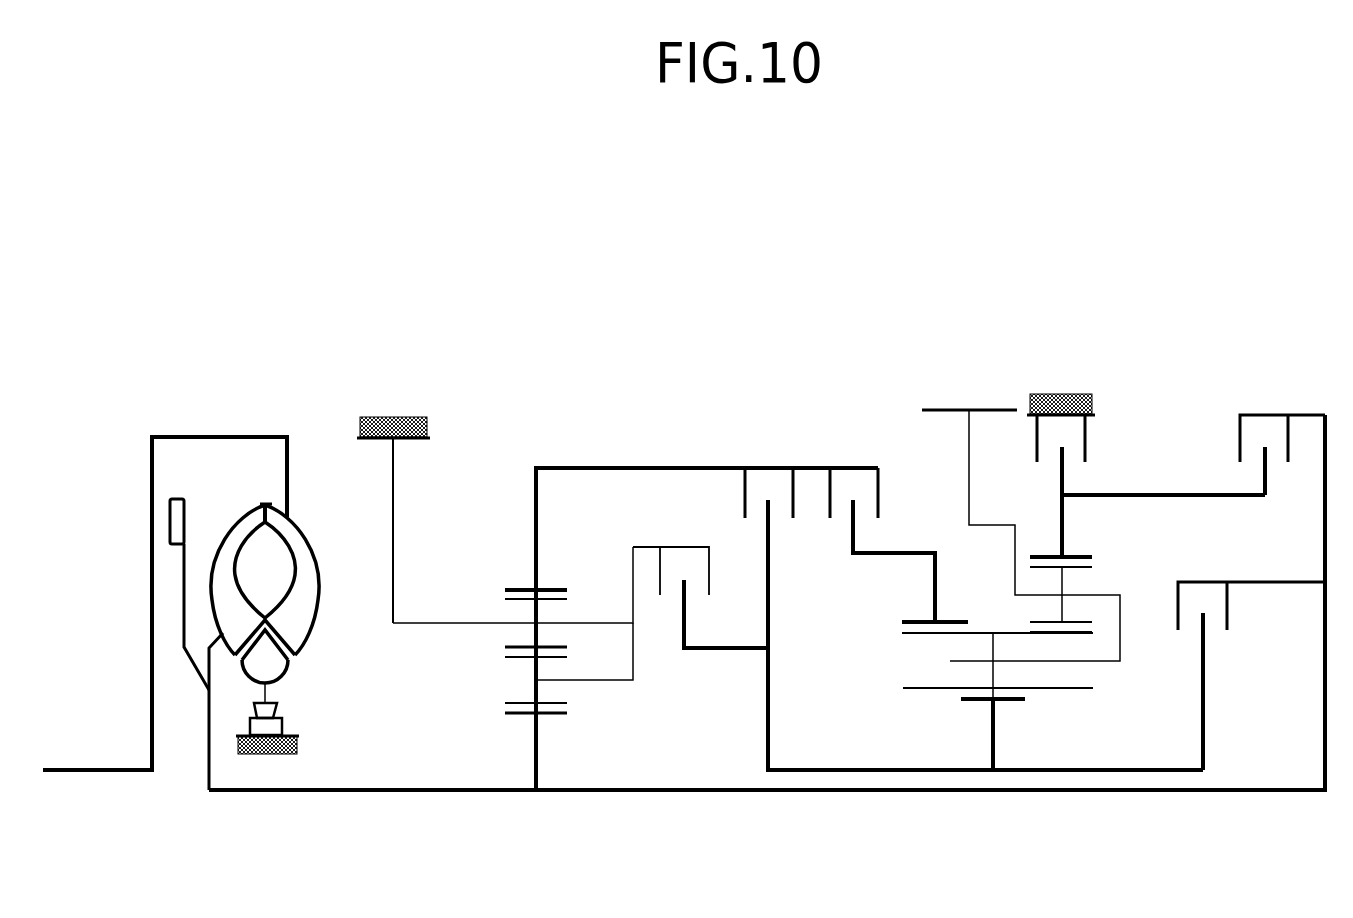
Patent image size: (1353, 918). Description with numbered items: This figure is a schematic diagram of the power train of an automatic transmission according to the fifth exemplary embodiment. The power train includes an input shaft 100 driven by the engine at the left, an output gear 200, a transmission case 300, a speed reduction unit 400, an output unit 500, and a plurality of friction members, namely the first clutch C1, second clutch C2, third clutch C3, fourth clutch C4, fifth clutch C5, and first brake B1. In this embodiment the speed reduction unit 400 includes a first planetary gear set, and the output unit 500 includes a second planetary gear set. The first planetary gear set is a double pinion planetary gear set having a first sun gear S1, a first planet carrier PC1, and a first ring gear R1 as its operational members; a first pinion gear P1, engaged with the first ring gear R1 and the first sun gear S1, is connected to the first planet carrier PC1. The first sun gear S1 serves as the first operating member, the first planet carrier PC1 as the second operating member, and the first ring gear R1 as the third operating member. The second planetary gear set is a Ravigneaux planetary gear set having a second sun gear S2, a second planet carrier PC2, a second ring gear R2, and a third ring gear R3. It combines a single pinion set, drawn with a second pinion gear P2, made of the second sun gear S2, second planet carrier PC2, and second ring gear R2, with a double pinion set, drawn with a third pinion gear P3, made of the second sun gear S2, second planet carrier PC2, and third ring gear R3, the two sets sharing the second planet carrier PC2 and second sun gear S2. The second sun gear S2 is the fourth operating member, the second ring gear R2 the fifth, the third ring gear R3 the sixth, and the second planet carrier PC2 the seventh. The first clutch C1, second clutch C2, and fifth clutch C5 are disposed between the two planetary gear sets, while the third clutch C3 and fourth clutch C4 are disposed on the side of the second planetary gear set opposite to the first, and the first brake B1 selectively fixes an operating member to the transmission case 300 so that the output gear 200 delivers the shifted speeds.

The input shaft 100 is at (342, 792).
The output gear 200 is at (969, 465).
The transmission case 300 is at (404, 415).
The speed reduction unit 400 is at (635, 670).
The output unit 500 is at (1014, 696).
The first clutch C1 is at (882, 530).
The second clutch C2 is at (974, 604).
The third clutch C3 is at (1251, 659).
The fourth clutch C4 is at (1282, 438).
The fifth clutch C5 is at (700, 582).
The first brake B1 is at (1151, 486).
The first ring gear R1 is at (532, 576).
The first pinion gear P1 is at (565, 658).
The first sun gear S1 is at (534, 728).
The first planet carrier PC1 is at (513, 585).
The second ring gear R2 is at (995, 610).
The second pinion gear P2 is at (998, 668).
The second sun gear S2 is at (996, 720).
The second planet carrier PC2 is at (985, 583).
The third ring gear R3 is at (1065, 543).
The third pinion gear P3 is at (1081, 596).